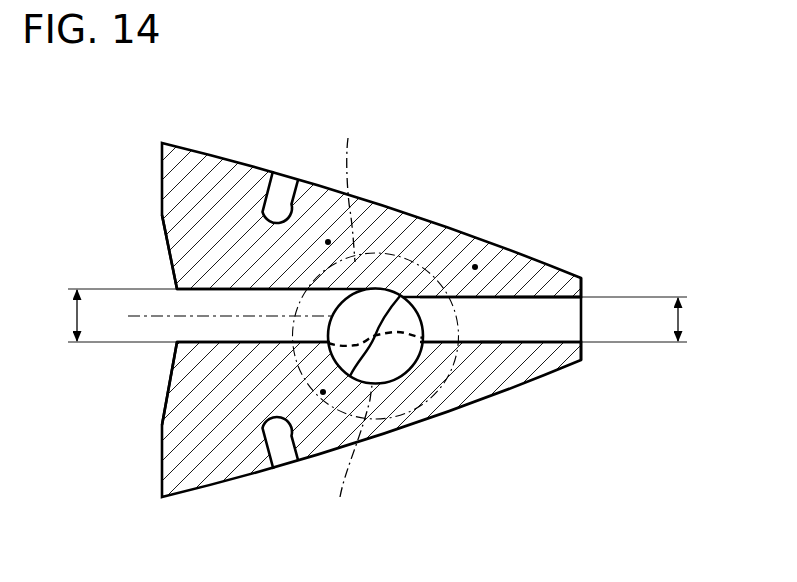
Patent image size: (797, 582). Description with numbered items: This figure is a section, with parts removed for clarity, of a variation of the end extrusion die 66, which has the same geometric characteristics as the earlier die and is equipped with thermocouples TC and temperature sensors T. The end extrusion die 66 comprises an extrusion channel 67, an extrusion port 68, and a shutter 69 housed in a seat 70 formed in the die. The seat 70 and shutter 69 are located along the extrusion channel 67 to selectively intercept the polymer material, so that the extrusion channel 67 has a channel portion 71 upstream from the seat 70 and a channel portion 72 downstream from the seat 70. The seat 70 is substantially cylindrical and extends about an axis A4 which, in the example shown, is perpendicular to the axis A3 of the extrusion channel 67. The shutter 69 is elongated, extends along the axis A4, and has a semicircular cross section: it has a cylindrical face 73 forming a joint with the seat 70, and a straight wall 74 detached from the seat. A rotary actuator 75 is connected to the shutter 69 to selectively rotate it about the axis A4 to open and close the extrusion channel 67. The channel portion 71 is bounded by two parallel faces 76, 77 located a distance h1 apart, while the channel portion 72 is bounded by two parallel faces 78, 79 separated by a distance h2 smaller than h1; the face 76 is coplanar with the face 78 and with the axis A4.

The end extrusion die 66 is at (625, 253).
The extrusion channel 67 is at (277, 333).
The extrusion port 68 is at (585, 333).
The shutter 69 is at (397, 290).
The seat 70 is at (393, 372).
The channel portion 71 is at (227, 288).
The channel portion 72 is at (502, 295).
The cylindrical face 73 is at (450, 347).
The straight wall 74 is at (330, 320).
The rotary actuator 75 is at (400, 305).
The face 76 is at (198, 340).
The face 77 is at (212, 293).
The face 78 is at (511, 343).
The face 79 is at (538, 302).
The temperature sensors T is at (475, 267).
The thermocouples TC is at (328, 242).
The axis A3 is at (349, 188).
The axis A4 is at (352, 457).
The distance h1 is at (113, 315).
The distance h2 is at (644, 319).